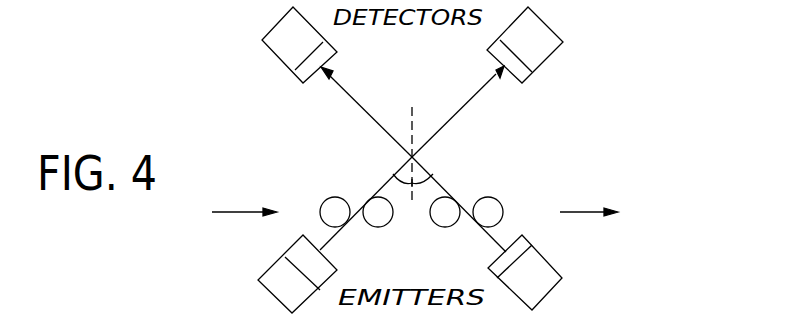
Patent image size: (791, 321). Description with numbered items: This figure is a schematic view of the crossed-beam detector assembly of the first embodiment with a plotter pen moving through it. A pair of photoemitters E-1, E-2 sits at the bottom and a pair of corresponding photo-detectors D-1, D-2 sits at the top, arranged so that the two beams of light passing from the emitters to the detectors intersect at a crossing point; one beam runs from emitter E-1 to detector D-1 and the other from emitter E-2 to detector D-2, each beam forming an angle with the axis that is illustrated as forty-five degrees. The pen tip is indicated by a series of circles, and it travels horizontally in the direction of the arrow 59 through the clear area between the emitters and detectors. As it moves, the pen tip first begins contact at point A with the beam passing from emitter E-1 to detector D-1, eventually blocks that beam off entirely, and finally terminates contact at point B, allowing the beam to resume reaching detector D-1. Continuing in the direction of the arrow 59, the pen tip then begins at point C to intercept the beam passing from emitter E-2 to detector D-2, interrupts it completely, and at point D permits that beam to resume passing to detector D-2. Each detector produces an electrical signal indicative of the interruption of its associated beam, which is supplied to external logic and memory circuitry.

The photo-detector D-1 is at (537, 37).
The photo-detector D-2 is at (293, 35).
The photoemitter E-1 is at (290, 278).
The photoemitter E-2 is at (538, 285).
The arrow 59 is at (243, 202).
The point A is at (327, 201).
The point B is at (378, 225).
The point C is at (445, 224).
The point D is at (496, 201).